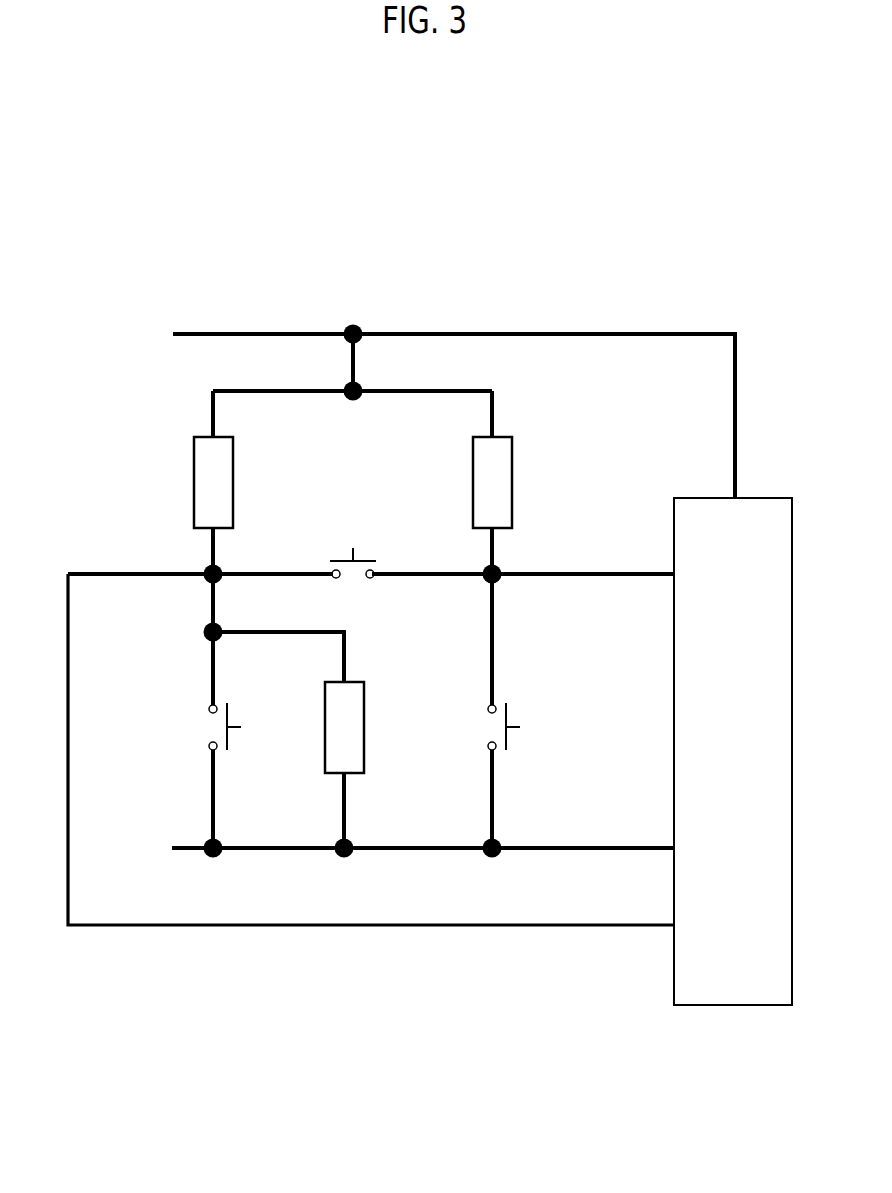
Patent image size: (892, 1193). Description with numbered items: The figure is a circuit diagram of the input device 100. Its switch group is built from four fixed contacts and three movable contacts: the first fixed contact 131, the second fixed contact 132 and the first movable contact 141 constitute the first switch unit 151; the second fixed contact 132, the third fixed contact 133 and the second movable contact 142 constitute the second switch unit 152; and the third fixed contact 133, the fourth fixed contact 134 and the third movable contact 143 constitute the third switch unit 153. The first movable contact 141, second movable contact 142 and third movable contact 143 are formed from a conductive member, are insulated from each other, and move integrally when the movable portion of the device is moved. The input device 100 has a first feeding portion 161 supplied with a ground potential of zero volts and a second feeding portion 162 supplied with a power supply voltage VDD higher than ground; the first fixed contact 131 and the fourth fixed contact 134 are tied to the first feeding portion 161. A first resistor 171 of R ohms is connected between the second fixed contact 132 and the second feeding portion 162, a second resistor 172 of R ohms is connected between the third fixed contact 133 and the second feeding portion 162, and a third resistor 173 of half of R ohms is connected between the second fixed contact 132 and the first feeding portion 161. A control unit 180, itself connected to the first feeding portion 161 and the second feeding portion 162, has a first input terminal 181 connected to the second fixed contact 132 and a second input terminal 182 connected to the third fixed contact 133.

The input device 100 is at (247, 208).
The first fixed contact 131 is at (207, 840).
The second fixed contact 132 is at (204, 580).
The third fixed contact 133 is at (497, 582).
The fourth fixed contact 134 is at (498, 840).
The first movable contact 141 is at (228, 748).
The second movable contact 142 is at (340, 562).
The third movable contact 143 is at (508, 743).
The first switch unit 151 is at (208, 708).
The second switch unit 152 is at (374, 580).
The third switch unit 153 is at (487, 708).
The first feeding portion 161 is at (437, 850).
The second feeding portion 162 is at (378, 334).
The first resistor 171 is at (203, 472).
The second resistor 172 is at (495, 473).
The third resistor 173 is at (347, 722).
The control unit 180 is at (718, 497).
The first input terminal 181 is at (673, 927).
The second input terminal 182 is at (672, 573).